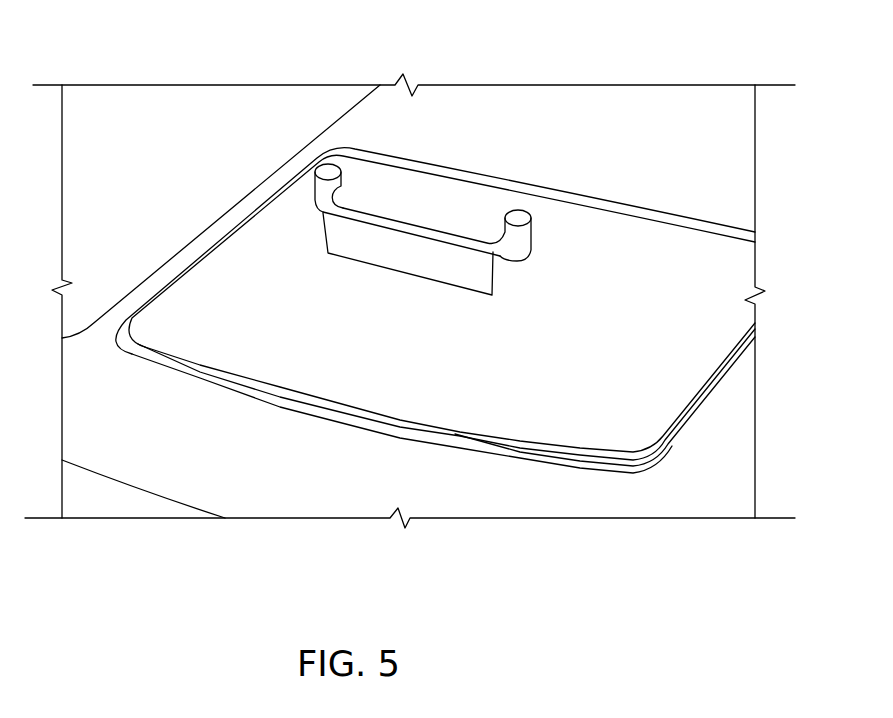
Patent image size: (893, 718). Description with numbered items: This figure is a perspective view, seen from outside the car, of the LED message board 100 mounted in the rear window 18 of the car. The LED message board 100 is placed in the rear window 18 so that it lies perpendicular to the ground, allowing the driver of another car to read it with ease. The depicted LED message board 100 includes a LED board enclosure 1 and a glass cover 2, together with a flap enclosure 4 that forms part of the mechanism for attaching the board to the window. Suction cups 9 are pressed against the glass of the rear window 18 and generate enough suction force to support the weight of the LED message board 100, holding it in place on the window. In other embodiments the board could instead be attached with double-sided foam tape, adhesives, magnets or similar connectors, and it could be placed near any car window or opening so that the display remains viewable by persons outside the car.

The LED message board 100 is at (303, 237).
The LED board enclosure 1 is at (368, 220).
The glass cover 2 is at (410, 236).
The flap enclosure 4 is at (517, 245).
The suction cups 9 is at (327, 166).
The rear window 18 is at (578, 220).